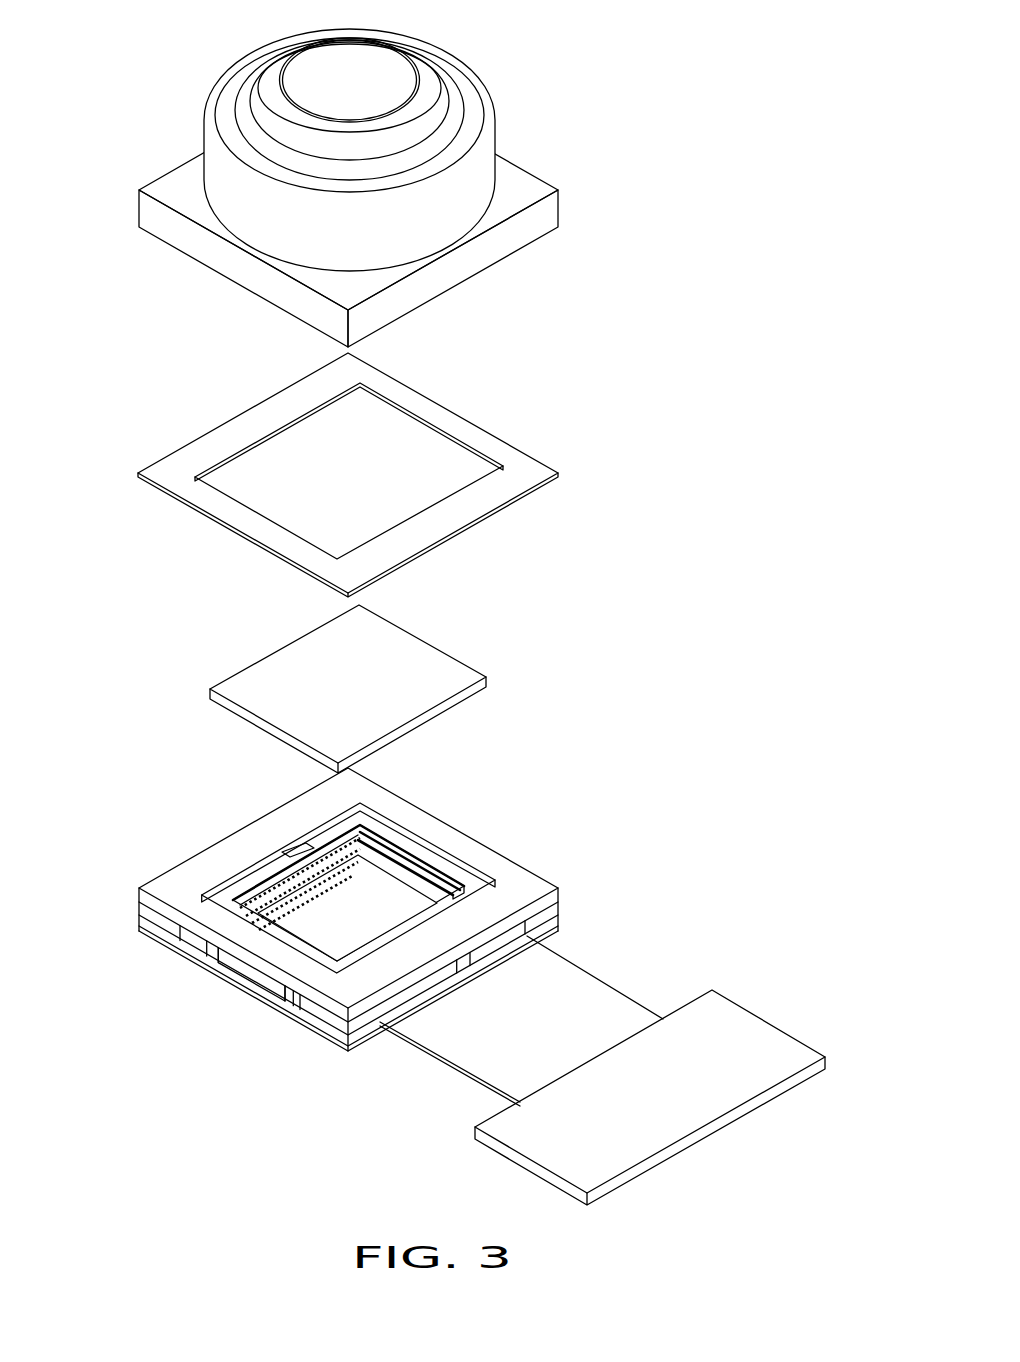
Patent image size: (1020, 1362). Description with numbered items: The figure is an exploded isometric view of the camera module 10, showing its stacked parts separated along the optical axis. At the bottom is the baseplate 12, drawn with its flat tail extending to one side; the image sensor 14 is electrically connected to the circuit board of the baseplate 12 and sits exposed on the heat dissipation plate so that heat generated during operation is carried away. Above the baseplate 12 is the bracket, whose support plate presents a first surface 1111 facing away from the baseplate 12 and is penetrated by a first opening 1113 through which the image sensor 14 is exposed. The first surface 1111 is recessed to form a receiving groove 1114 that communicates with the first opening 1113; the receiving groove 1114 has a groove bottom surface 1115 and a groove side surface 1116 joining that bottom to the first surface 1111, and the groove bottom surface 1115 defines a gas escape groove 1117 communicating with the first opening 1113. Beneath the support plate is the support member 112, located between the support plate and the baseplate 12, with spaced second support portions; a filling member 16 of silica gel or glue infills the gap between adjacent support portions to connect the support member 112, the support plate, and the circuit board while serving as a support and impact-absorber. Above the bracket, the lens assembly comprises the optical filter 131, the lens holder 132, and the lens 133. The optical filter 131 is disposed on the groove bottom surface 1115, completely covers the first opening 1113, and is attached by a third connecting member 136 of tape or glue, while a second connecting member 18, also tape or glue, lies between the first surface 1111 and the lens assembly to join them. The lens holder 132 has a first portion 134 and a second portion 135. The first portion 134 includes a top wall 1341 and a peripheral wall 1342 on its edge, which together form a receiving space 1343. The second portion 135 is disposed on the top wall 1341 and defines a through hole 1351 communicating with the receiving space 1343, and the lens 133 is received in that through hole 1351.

The camera module 10 is at (128, 54).
The baseplate 12 is at (420, 1058).
The image sensor 14 is at (375, 900).
The filling member 16 is at (235, 963).
The second connecting member 18 is at (206, 443).
The support member 112 is at (290, 997).
The optical filter 131 is at (424, 660).
The lens holder 132 is at (344, 200).
The lens 133 is at (380, 72).
The first portion 134 is at (301, 226).
The second portion 135 is at (423, 165).
The third connecting member 136 is at (335, 830).
The first surface 1111 is at (207, 867).
The first opening 1113 is at (418, 857).
The receiving groove 1114 is at (414, 848).
The groove bottom surface 1115 is at (330, 827).
The groove side surface 1116 is at (403, 830).
The gas escape groove 1117 is at (293, 855).
The top wall 1341 is at (332, 282).
The peripheral wall 1342 is at (317, 309).
The receiving space 1343 is at (168, 243).
The through hole 1351 is at (435, 157).